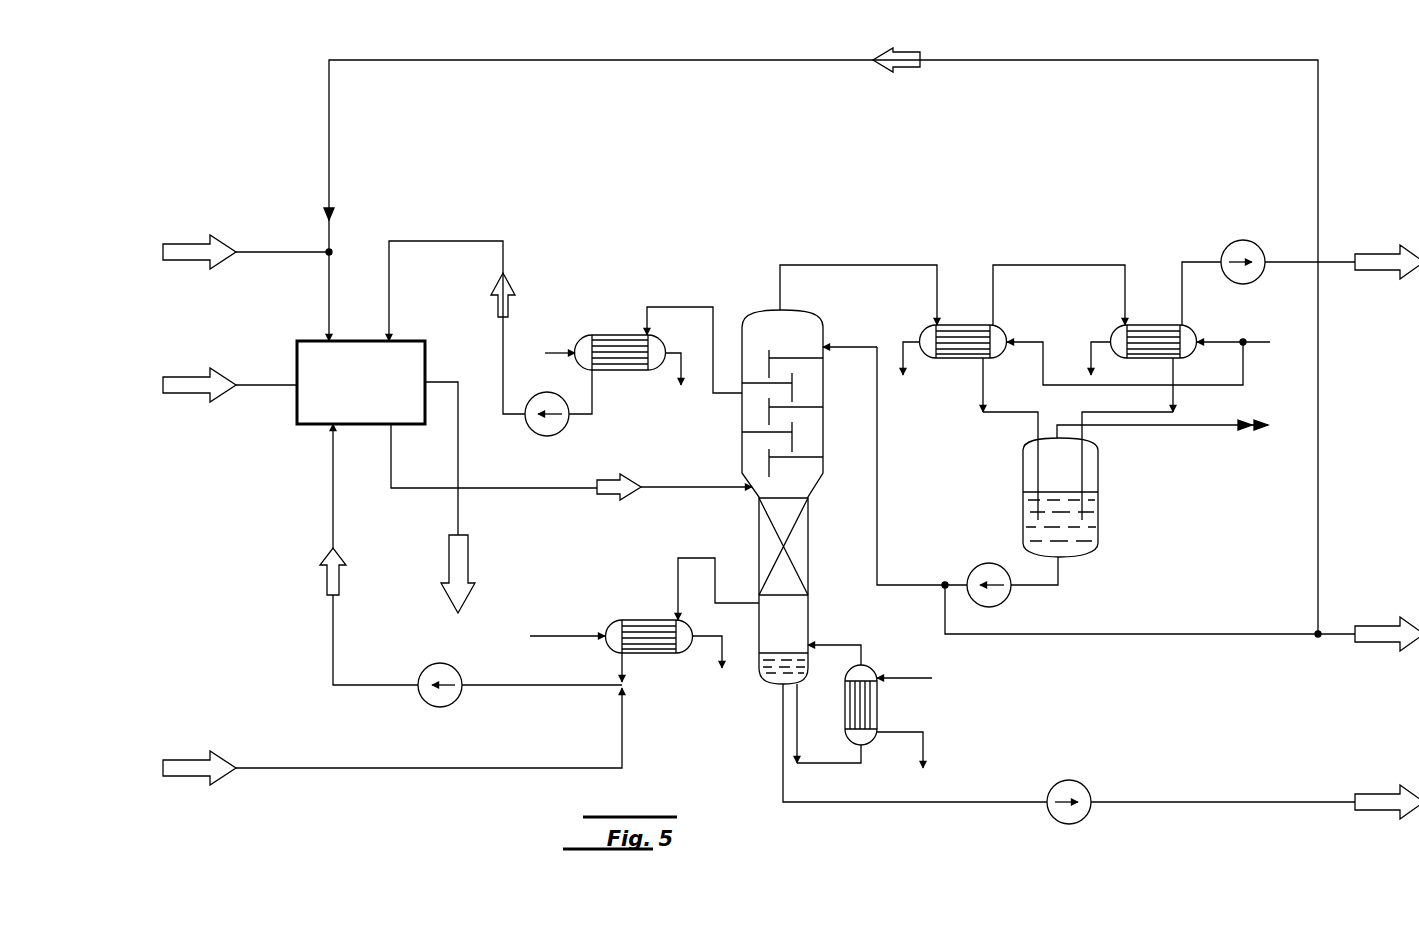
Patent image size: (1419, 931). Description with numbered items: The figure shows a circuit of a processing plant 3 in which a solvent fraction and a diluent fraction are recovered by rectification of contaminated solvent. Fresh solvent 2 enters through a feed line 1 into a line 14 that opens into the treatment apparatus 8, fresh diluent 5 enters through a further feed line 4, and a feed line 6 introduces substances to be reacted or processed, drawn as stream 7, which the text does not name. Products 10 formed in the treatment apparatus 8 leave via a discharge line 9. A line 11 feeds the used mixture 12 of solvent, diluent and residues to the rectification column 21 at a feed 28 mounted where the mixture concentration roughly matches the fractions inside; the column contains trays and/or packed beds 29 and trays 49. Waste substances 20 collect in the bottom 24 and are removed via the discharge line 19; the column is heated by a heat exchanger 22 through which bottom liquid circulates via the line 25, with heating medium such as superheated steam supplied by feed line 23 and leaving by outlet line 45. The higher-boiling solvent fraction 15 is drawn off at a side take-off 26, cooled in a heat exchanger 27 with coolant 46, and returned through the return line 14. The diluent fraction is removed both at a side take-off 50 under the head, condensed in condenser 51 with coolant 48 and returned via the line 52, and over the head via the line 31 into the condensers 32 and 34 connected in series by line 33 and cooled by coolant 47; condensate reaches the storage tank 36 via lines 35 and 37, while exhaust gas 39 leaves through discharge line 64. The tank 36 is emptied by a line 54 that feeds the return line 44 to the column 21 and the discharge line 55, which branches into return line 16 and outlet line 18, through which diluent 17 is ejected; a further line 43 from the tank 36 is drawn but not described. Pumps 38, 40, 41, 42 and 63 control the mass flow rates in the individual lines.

The feed line 1 is at (338, 770).
The fresh solvent 2 is at (183, 762).
The processing plant 3 is at (247, 162).
The feed line 4 is at (287, 250).
The fresh diluent 5 is at (183, 242).
The feed line 6 is at (268, 383).
The feed stream 7 is at (181, 380).
The treatment apparatus 8 is at (305, 407).
The discharge line 9 is at (461, 462).
The products 10 is at (468, 570).
The line 11 is at (537, 490).
The used mixture 12 is at (608, 494).
The return line 14 is at (333, 645).
The solvent fraction 15 is at (327, 592).
The return line 16 is at (603, 63).
The diluent 17 is at (902, 64).
The outlet line 18 is at (1332, 640).
The discharge line 19 is at (1233, 798).
The waste substances 20 is at (1378, 800).
The rectification column 21 is at (740, 455).
The heat exchanger 22 is at (868, 705).
The feed line 23 is at (918, 676).
The bottom 24 is at (760, 682).
The line 25 is at (850, 642).
The side take-off 26 is at (748, 600).
The heat exchanger 27 is at (660, 655).
The feed 28 is at (742, 493).
The trays and/or packed beds 29 is at (812, 544).
The line 31 is at (848, 263).
The condenser 32 is at (962, 335).
The line 33 is at (1052, 263).
The condenser 34 is at (1153, 338).
The line 35 is at (995, 418).
The storage tank 36 is at (1100, 508).
The line 37 is at (1152, 418).
The pump 38 is at (1243, 242).
The exhaust gas 39 is at (1373, 258).
The pump 40 is at (990, 568).
The pump 41 is at (1070, 784).
The pump 42 is at (450, 700).
The vent line 43 is at (1188, 427).
The return line 44 is at (880, 474).
The outlet line 45 is at (930, 740).
The coolant 46 is at (568, 632).
The coolant 47 is at (1248, 345).
The coolant 48 is at (552, 348).
The trays 49 is at (805, 407).
The side take-off 50 is at (713, 393).
The condenser 51 is at (618, 343).
The line 52 is at (504, 255).
The line 54 is at (1062, 576).
The discharge line 55 is at (1240, 632).
The pump 63 is at (548, 432).
The discharge line 64 is at (1196, 248).